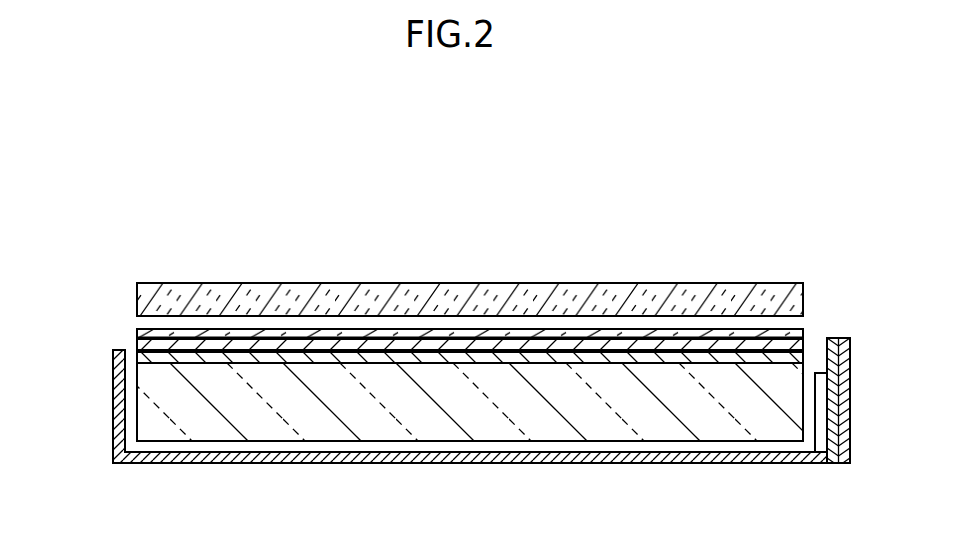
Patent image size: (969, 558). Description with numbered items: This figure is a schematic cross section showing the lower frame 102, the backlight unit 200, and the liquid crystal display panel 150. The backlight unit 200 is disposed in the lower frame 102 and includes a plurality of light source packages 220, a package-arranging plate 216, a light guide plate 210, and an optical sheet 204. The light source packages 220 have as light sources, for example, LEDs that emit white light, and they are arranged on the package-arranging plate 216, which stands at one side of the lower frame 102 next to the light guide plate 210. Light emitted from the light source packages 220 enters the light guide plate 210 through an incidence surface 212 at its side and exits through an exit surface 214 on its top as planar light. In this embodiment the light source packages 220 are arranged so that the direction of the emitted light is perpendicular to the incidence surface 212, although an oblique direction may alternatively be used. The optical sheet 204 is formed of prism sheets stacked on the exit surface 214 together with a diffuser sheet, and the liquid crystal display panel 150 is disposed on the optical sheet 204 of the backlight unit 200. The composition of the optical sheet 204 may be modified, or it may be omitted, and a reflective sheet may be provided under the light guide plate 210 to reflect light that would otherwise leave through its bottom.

The liquid crystal display panel 150 is at (739, 303).
The backlight unit 200 is at (828, 390).
The optical sheet 204 is at (146, 358).
The exit surface 214 is at (442, 364).
The lower frame 102 is at (533, 458).
The light guide plate 210 is at (245, 428).
The incidence surface 212 is at (799, 406).
The light source packages 220 is at (823, 425).
The package-arranging plate 216 is at (833, 443).